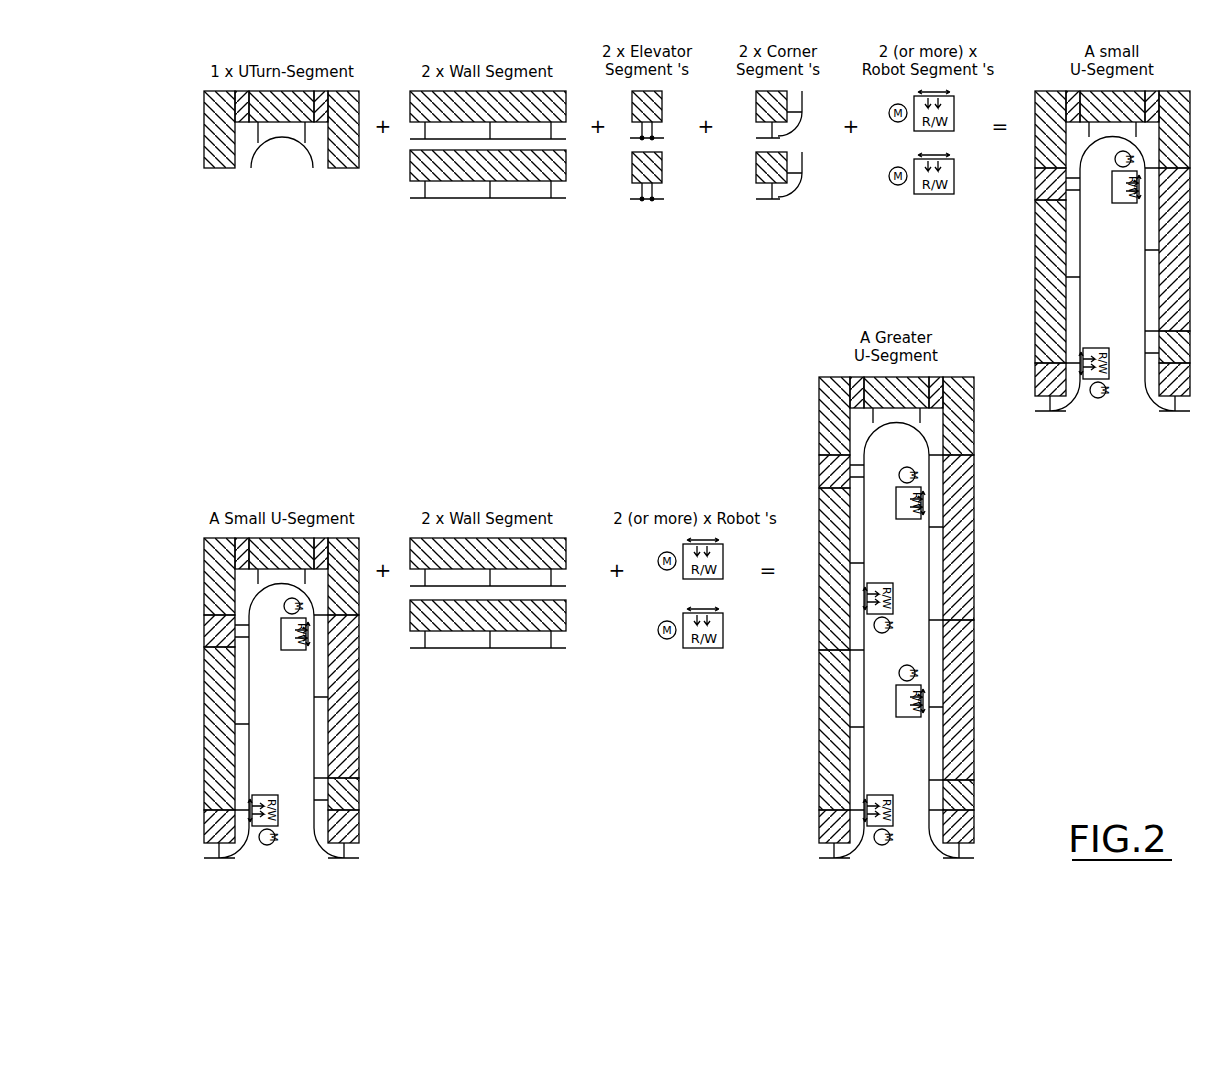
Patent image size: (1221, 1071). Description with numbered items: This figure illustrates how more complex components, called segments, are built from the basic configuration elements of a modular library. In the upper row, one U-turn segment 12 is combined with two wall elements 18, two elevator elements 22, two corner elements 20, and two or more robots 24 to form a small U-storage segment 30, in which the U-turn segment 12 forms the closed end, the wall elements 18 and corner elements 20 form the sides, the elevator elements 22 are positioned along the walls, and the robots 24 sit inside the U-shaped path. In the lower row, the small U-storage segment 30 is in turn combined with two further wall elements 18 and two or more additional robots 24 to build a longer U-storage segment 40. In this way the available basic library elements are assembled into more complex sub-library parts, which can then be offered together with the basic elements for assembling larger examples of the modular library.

The U-turn segment 12 is at (341, 168).
The wall element 18 is at (566, 172).
The corner element 20 is at (791, 193).
The elevator element 22 is at (662, 170).
The robot 24 is at (936, 195).
The small U-storage segment 30 is at (1035, 268).
The longer U-storage segment 40 is at (818, 606).